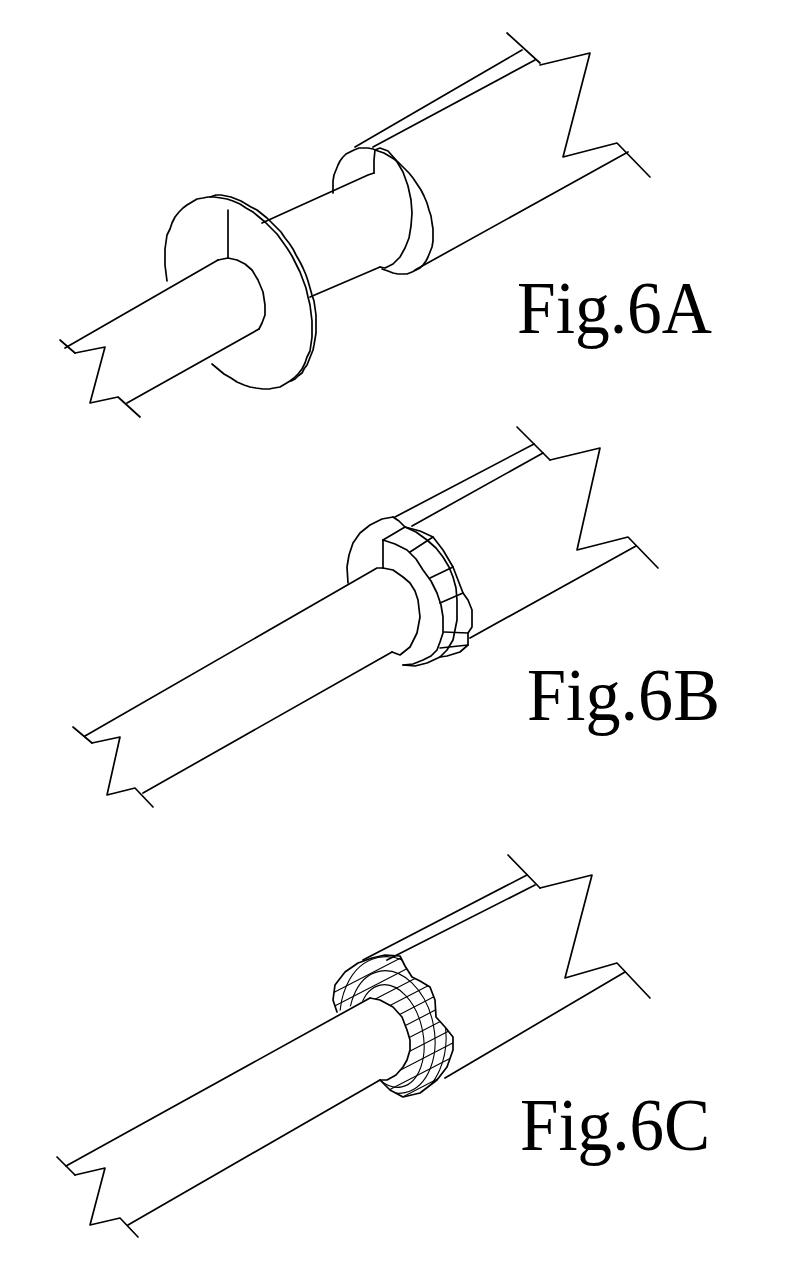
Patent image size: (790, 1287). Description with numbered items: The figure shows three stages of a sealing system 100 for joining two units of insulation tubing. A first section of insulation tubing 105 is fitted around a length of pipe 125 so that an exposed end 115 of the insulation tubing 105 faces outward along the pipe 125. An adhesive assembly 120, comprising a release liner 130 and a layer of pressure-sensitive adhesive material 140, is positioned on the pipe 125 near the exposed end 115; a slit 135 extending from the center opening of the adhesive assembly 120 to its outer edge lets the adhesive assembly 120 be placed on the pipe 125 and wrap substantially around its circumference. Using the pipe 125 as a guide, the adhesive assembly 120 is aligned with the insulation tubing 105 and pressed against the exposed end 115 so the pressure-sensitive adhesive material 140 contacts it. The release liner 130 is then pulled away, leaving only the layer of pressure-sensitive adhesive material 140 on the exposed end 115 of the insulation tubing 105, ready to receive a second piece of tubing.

In FIG. 6A, the sealing system 100 is at (78, 50).
In FIG. 6A, the insulation tubing 105 is at (502, 135).
In FIG. 6B, the insulation tubing 105 is at (580, 508).
In FIG. 6C, the insulation tubing 105 is at (501, 954).
In FIG. 6A, the exposed end 115 is at (385, 258).
In FIG. 6A, the adhesive assembly 120 is at (365, 405).
In FIG. 6A, the pipe 125 is at (220, 274).
In FIG. 6B, the pipe 125 is at (246, 728).
In FIG. 6C, the pipe 125 is at (233, 1124).
In FIG. 6A, the release liner 130 is at (240, 356).
In FIG. 6B, the release liner 130 is at (409, 648).
In FIG. 6A, the slit 135 is at (211, 182).
In FIG. 6A, the pressure-sensitive adhesive material 140 is at (258, 150).
In FIG. 6C, the pressure-sensitive adhesive material 140 is at (390, 1080).